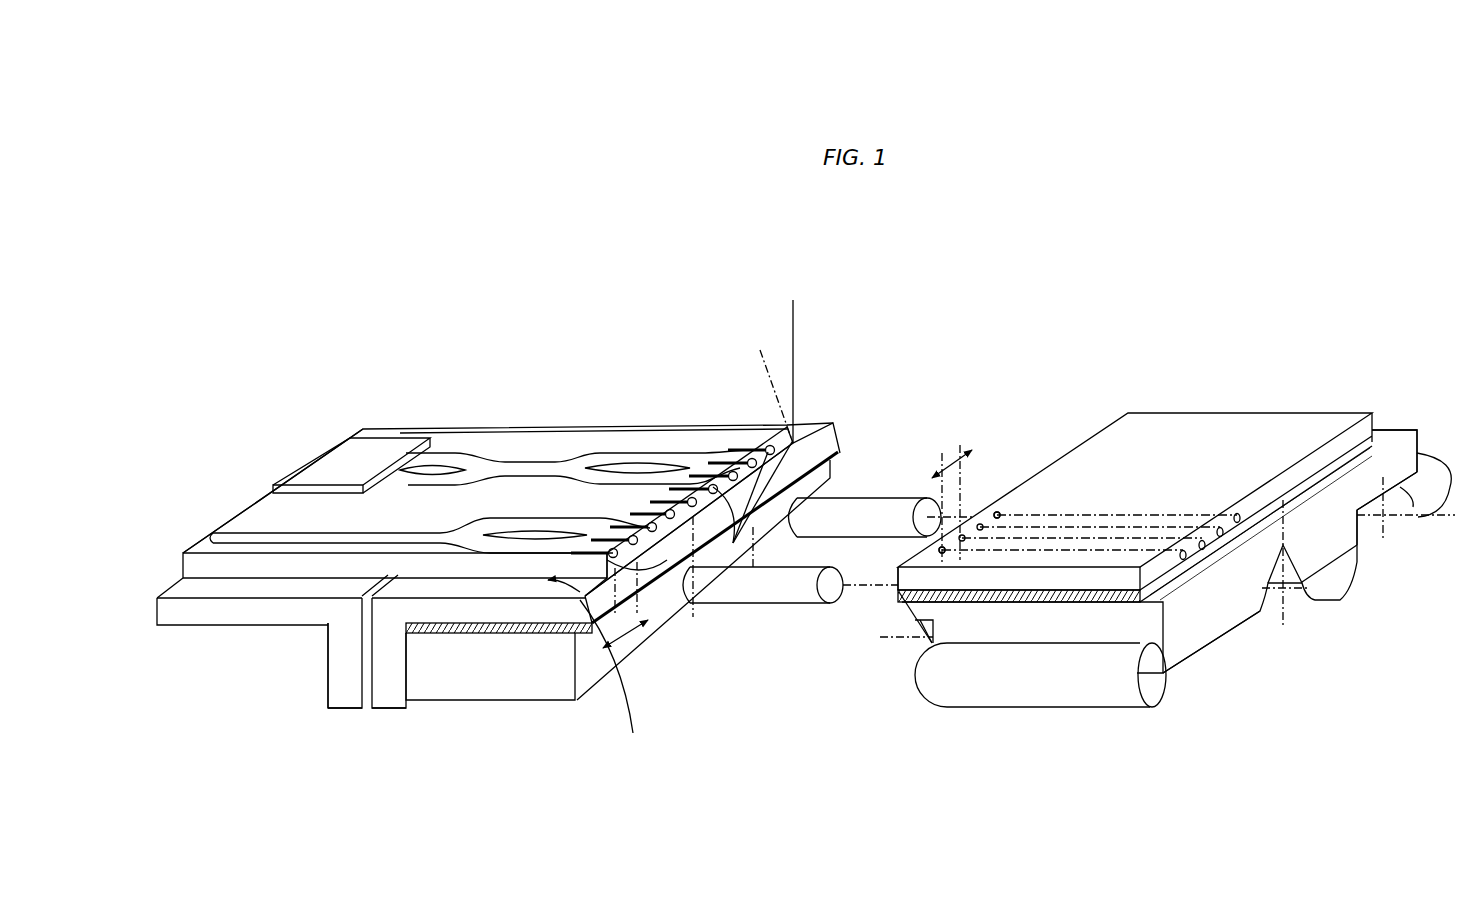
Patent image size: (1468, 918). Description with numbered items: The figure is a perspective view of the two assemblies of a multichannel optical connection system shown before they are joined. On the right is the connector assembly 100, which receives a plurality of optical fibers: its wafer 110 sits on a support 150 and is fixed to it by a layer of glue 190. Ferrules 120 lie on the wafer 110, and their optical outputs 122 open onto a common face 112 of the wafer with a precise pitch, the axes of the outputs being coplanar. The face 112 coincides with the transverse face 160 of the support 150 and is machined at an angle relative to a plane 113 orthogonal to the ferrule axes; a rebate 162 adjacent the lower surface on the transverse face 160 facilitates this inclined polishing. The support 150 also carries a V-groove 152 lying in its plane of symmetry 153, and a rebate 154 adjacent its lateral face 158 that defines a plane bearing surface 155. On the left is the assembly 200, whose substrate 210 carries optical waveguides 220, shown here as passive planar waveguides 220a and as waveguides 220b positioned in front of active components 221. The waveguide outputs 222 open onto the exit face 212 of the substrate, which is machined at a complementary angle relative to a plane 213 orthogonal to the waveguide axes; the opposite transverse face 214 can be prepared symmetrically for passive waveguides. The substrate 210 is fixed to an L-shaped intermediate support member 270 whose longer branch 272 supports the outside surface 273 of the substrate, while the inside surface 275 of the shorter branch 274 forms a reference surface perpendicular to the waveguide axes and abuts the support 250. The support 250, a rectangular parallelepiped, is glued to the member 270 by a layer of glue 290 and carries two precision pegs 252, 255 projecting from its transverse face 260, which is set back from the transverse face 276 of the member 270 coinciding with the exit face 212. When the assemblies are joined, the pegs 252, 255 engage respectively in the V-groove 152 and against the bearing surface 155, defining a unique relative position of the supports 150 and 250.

The connector assembly 100 is at (1160, 410).
The wafer 110 is at (1087, 448).
The common face of wafer 112 is at (897, 583).
The plane orthogonal to ferrule axes 113 is at (895, 637).
The ferrules 120 is at (1185, 560).
The optical outputs 122 is at (978, 530).
The support 150 is at (1215, 625).
The V-groove 152 is at (1290, 598).
The plane of symmetry 153 is at (1280, 520).
The rebate 154 is at (1368, 522).
The plane bearing surface 155 is at (1403, 490).
The lateral face of support 158 is at (1428, 430).
The transverse face of support 160 is at (907, 607).
The rebate 162 is at (920, 645).
The layer of glue 190 is at (1020, 598).
The assembly 200 is at (484, 378).
The substrate 210 is at (450, 436).
The exit face of substrate 212 is at (662, 562).
The plane orthogonal to waveguide axes 213 is at (793, 345).
The transverse face of substrate 214 is at (240, 506).
The optical waveguides 220 is at (482, 449).
The passive planar waveguides 220a is at (522, 517).
The optical waveguides 220b is at (607, 447).
The active components 221 is at (346, 455).
The optical outputs 222 is at (681, 529).
The support 250 is at (505, 690).
The precision peg 252 is at (780, 590).
The precision peg 255 is at (858, 499).
The transverse face of support 260 is at (637, 650).
The intermediate support member 270 is at (382, 690).
The longer branch 272 is at (188, 610).
The outside surface of substrate 273 is at (619, 679).
The shorter branch 274 is at (336, 706).
The inside surface of shorter branch 275 is at (323, 657).
The transverse face of intermediate support 276 is at (667, 562).
The layer of glue 290 is at (548, 635).